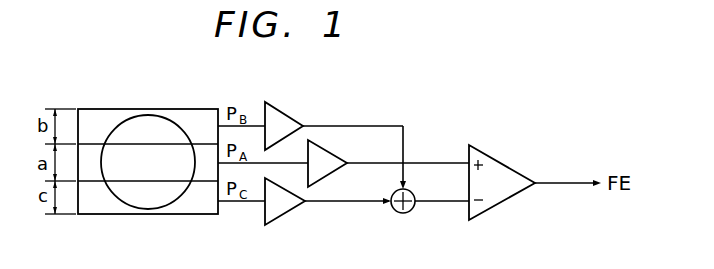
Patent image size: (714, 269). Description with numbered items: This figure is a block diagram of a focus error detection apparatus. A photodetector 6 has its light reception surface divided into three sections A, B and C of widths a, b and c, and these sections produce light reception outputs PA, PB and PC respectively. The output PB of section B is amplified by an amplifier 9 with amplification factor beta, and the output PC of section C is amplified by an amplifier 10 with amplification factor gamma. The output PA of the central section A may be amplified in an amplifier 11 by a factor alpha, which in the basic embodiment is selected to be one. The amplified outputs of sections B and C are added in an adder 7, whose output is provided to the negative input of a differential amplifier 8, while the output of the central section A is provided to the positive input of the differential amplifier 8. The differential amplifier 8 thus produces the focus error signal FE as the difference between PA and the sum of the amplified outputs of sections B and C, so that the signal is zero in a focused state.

The photodetector 6 is at (167, 104).
The amplifier 9 is at (286, 115).
The amplifier 11 is at (333, 170).
The amplifier 10 is at (290, 212).
The adder 7 is at (403, 213).
The differential amplifier 8 is at (507, 167).